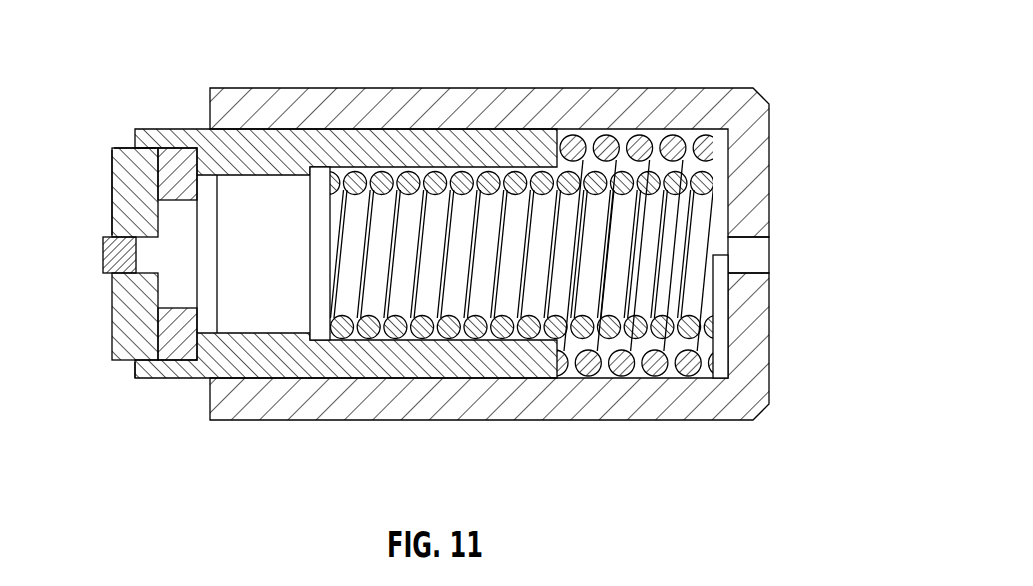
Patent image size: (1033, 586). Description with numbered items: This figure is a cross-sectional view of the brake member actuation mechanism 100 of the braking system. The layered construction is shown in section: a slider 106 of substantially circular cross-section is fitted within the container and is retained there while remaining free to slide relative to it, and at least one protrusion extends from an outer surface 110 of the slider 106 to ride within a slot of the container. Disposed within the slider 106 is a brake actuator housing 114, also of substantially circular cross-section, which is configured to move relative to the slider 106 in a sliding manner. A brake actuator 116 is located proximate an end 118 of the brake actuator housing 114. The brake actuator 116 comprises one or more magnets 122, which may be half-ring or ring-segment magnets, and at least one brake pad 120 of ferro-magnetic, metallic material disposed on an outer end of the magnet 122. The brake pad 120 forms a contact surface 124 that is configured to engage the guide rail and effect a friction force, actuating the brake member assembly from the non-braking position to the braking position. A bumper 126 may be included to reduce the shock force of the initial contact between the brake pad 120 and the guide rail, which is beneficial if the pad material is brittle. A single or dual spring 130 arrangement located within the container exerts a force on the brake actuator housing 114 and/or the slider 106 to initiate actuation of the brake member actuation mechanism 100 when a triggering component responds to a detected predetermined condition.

The brake member actuation mechanism 100 is at (763, 48).
The slider 106 is at (473, 100).
The outer surface 110 is at (267, 421).
The brake actuator housing 114 is at (370, 372).
The brake actuator 116 is at (121, 145).
The end 118 is at (132, 370).
The brake pad 120 is at (118, 178).
The magnet 122 is at (177, 157).
The contact surface 124 is at (112, 205).
The bumper 126 is at (110, 253).
The spring 130 is at (715, 328).